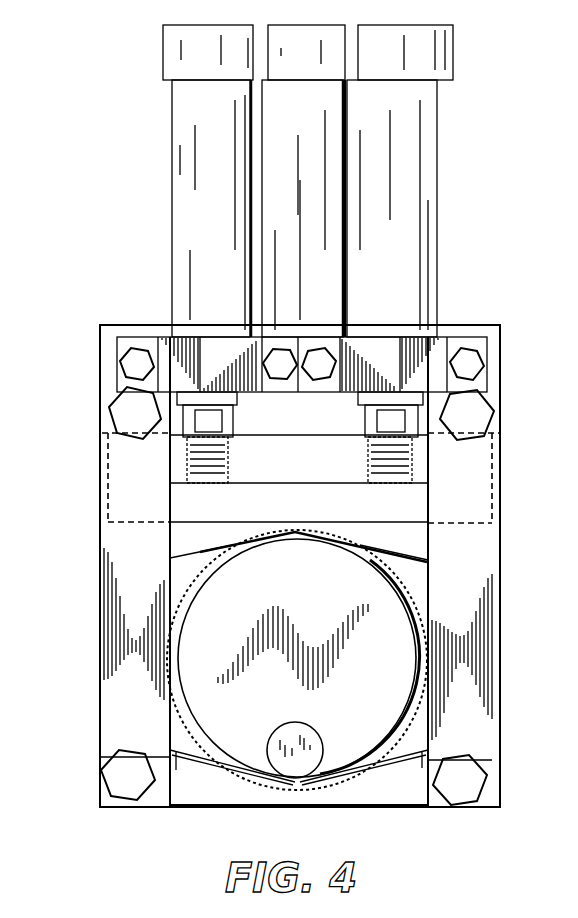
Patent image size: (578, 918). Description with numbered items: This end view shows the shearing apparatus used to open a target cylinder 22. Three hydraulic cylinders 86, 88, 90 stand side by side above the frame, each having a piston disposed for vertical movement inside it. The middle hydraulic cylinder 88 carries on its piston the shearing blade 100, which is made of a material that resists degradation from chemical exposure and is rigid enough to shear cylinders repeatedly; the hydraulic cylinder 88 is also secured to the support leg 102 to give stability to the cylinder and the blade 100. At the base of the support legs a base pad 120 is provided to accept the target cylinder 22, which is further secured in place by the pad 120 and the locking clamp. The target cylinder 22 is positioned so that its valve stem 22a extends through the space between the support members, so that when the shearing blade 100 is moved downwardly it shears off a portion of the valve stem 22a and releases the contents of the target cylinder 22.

The hydraulic cylinder 86 is at (210, 111).
The hydraulic cylinder 88 is at (310, 114).
The hydraulic cylinder 90 is at (395, 114).
The shearing blade 100 is at (308, 514).
The target cylinder 22 is at (328, 604).
The valve stem 22a is at (298, 730).
The support leg 102 is at (118, 544).
The base pad 120 is at (190, 795).